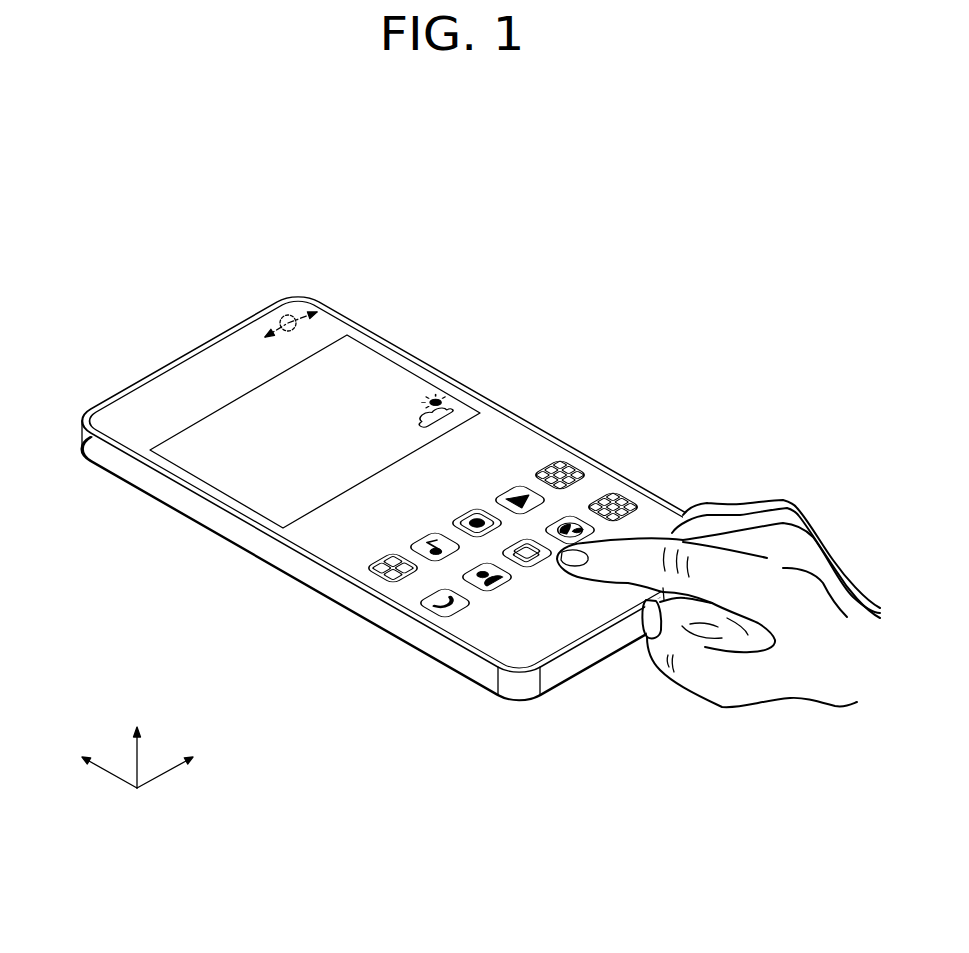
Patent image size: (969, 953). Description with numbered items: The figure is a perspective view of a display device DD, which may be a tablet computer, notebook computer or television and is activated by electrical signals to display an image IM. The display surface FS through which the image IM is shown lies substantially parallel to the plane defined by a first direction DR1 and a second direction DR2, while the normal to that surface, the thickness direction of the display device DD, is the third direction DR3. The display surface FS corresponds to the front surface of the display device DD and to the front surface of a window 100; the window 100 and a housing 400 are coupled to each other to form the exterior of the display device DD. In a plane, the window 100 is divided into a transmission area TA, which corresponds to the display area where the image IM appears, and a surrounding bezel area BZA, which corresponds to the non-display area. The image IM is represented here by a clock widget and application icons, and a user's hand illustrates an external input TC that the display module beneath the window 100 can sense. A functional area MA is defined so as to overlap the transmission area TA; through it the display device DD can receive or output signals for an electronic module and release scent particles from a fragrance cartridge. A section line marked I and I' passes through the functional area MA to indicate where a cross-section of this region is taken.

The display device DD is at (611, 286).
The window 100 is at (190, 495).
The housing 400 is at (250, 543).
The display surface FS is at (187, 255).
The bezel area BZA is at (211, 338).
The transmission area TA is at (182, 386).
The functional area MA is at (287, 314).
The image IM is at (403, 359).
The external input TC is at (833, 577).
The section line I is at (276, 348).
The section line I' is at (313, 329).
The first direction DR1 is at (186, 764).
The second direction DR2 is at (90, 764).
The third direction DR3 is at (137, 745).